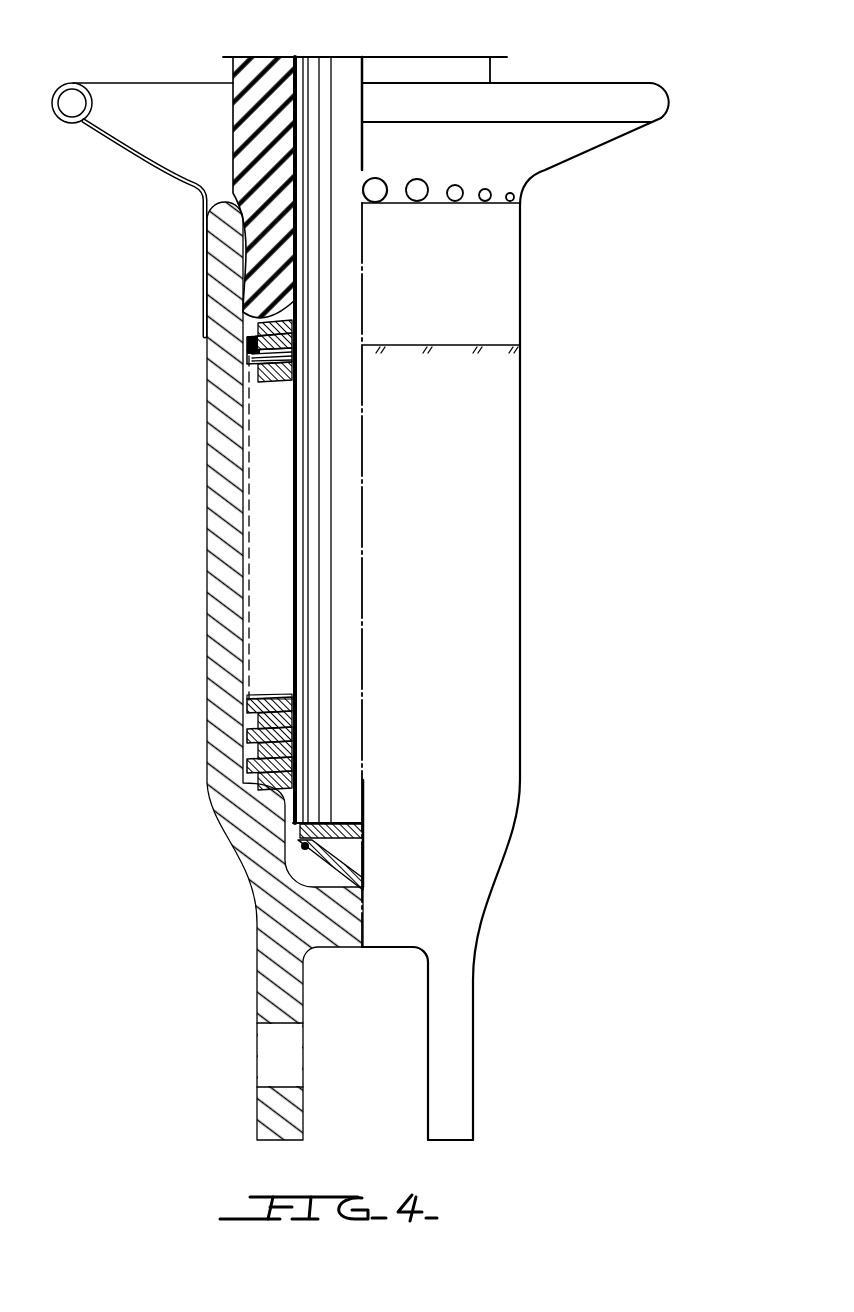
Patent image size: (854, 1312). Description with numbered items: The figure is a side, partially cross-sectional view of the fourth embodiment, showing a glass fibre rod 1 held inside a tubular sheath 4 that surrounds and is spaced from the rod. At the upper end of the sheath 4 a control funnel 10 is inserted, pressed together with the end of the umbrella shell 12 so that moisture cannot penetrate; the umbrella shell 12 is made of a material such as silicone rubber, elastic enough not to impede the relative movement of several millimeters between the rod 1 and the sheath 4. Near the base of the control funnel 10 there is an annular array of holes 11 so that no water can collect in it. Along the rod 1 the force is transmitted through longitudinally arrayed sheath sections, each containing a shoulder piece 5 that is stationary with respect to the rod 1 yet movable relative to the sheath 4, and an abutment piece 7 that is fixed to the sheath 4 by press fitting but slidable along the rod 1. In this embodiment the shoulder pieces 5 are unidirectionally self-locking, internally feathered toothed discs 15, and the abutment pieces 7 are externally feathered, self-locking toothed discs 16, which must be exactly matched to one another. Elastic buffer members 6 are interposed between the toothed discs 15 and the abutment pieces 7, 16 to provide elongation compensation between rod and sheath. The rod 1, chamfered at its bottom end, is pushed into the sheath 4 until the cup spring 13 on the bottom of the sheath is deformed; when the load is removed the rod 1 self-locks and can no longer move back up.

The glass fibre rod 1 is at (330, 75).
The tubular sheath 4 is at (207, 465).
The shoulder piece 5 is at (171, 543).
The elastic buffer member 6 is at (262, 357).
The abutment piece 7 is at (173, 537).
The control funnel 10 is at (177, 112).
The holes 11 is at (220, 192).
The umbrella shell 12 is at (263, 87).
The cup spring 13 is at (300, 868).
The internally feathered toothed disc 15 is at (247, 322).
The externally feathered toothed disc 16 is at (250, 338).